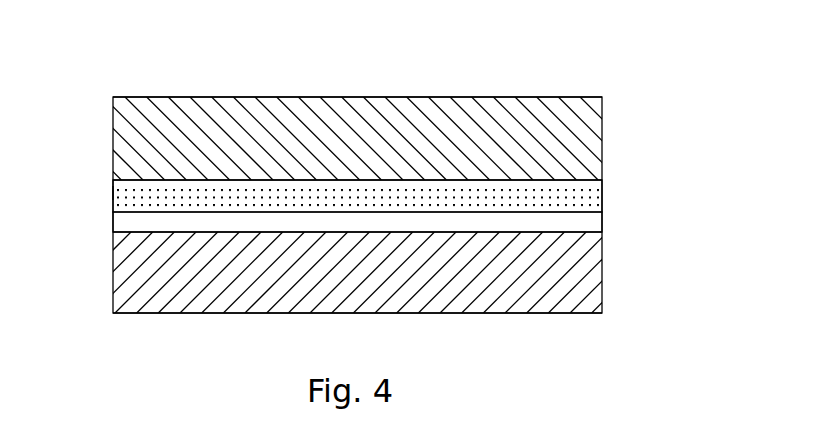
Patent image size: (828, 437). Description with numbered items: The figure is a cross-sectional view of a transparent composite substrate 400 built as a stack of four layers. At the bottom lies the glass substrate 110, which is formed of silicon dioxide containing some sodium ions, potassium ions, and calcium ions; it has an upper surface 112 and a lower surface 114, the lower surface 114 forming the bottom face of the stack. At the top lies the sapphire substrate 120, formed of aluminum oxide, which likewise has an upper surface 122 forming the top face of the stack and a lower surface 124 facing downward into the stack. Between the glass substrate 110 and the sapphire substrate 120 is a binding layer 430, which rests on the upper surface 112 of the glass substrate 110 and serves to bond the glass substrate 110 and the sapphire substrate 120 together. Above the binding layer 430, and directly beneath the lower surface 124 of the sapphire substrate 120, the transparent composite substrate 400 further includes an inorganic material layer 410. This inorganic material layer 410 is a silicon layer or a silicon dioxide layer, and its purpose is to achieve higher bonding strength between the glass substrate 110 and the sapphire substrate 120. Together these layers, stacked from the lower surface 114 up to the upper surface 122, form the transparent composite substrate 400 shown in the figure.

The transparent composite substrate 400 is at (80, 30).
The sapphire substrate 120 is at (593, 143).
The upper surface 122 is at (158, 97).
The lower surface 124 is at (113, 193).
The inorganic material layer 410 is at (593, 195).
The binding layer 430 is at (592, 222).
The upper surface 112 is at (113, 236).
The glass substrate 110 is at (603, 275).
The lower surface 114 is at (558, 315).